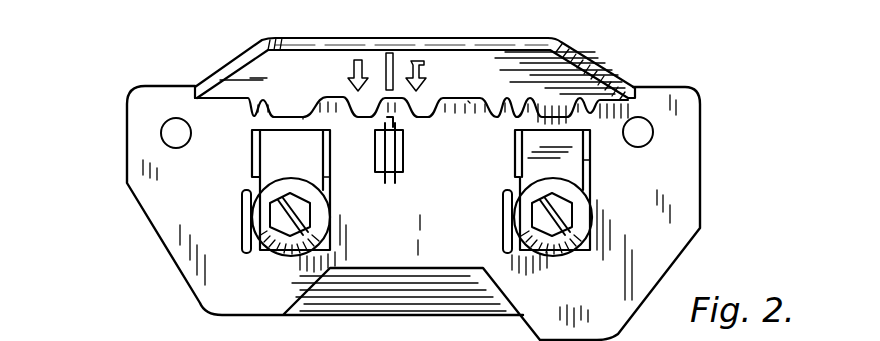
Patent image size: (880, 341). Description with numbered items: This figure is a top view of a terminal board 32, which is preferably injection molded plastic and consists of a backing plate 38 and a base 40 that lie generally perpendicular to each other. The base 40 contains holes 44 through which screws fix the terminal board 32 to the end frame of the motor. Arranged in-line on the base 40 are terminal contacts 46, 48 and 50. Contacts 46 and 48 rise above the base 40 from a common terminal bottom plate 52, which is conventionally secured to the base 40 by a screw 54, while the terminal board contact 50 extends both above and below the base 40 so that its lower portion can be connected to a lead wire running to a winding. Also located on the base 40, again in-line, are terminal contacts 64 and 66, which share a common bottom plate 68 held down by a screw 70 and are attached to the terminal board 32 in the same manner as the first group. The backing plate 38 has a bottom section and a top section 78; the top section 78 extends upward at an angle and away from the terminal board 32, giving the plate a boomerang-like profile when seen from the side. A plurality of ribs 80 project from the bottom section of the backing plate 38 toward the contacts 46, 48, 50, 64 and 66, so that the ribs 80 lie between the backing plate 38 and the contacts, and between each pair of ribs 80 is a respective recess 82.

The terminal board 32 is at (657, 223).
The backing plate 38 is at (567, 65).
The base 40 is at (143, 216).
The holes 44 is at (161, 133).
The terminal contact 46 is at (253, 153).
The terminal contact 48 is at (330, 168).
The terminal board contact 50 is at (391, 183).
The common terminal bottom plate 52 is at (243, 200).
The screw 54 is at (291, 258).
The terminal contact 64 is at (513, 177).
The terminal contact 66 is at (593, 162).
The common bottom plate 68 is at (513, 212).
The screw 70 is at (560, 250).
The top section 78 is at (505, 58).
The ribs 80 is at (196, 96).
The recesses 82 is at (322, 103).